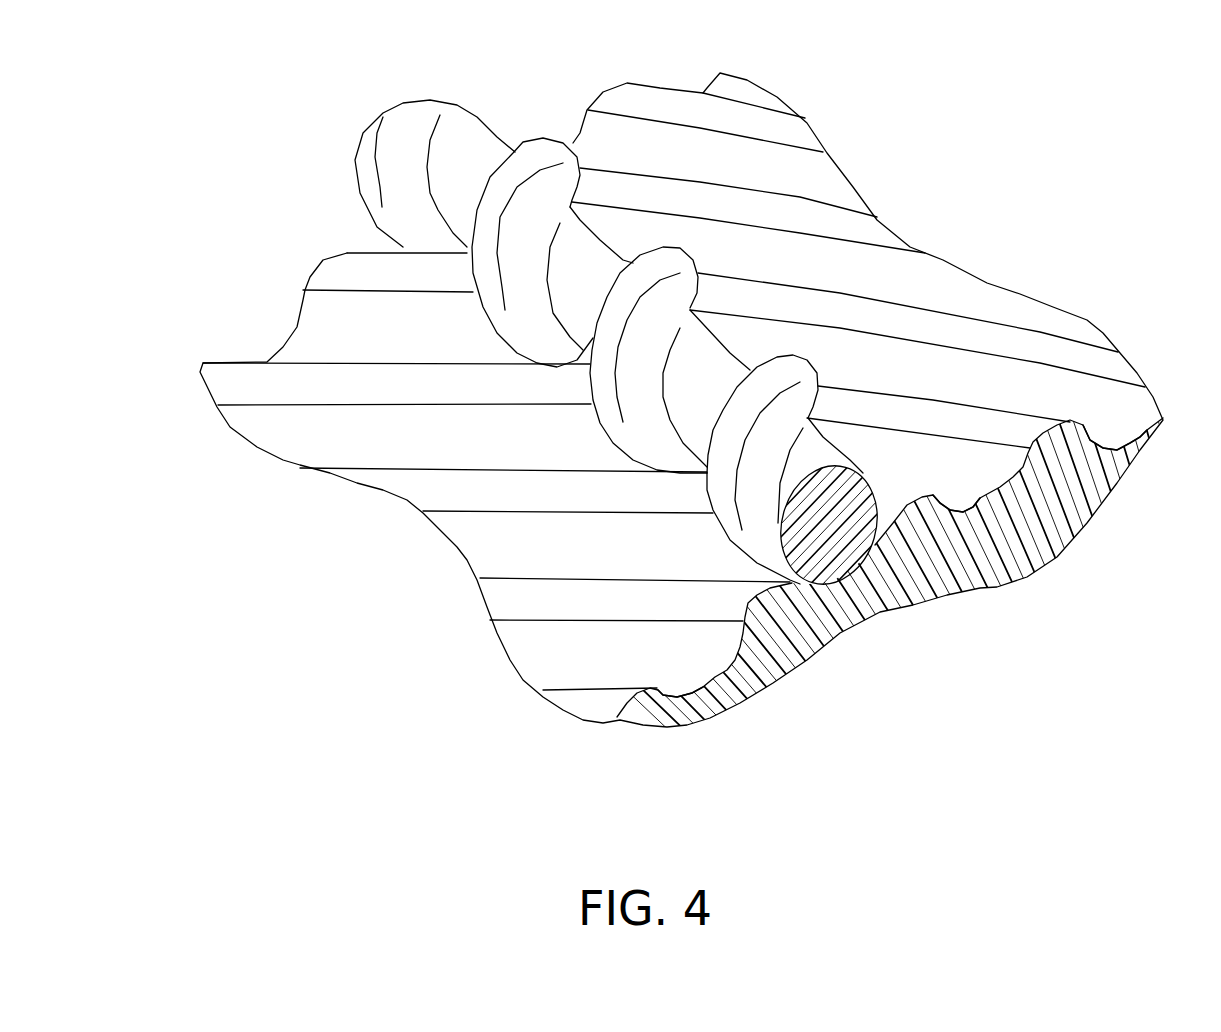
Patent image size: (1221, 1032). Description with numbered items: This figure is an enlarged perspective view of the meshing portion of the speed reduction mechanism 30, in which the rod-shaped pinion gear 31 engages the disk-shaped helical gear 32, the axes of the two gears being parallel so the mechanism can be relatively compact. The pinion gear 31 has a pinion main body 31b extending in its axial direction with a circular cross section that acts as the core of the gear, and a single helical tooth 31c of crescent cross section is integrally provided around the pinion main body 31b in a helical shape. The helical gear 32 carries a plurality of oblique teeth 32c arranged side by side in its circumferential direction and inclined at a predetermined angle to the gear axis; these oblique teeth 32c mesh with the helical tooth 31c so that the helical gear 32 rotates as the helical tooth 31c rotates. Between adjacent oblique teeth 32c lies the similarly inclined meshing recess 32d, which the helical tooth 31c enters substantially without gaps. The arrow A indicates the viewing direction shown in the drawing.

The speed reduction mechanism 30 is at (179, 164).
The pinion gear 31 is at (623, 357).
The pinion main body 31b is at (807, 302).
The helical tooth 31c is at (502, 450).
The helical gear 32 is at (686, 424).
The oblique tooth 32c is at (725, 469).
The meshing recess 32d is at (899, 608).
The direction of view A is at (1001, 711).